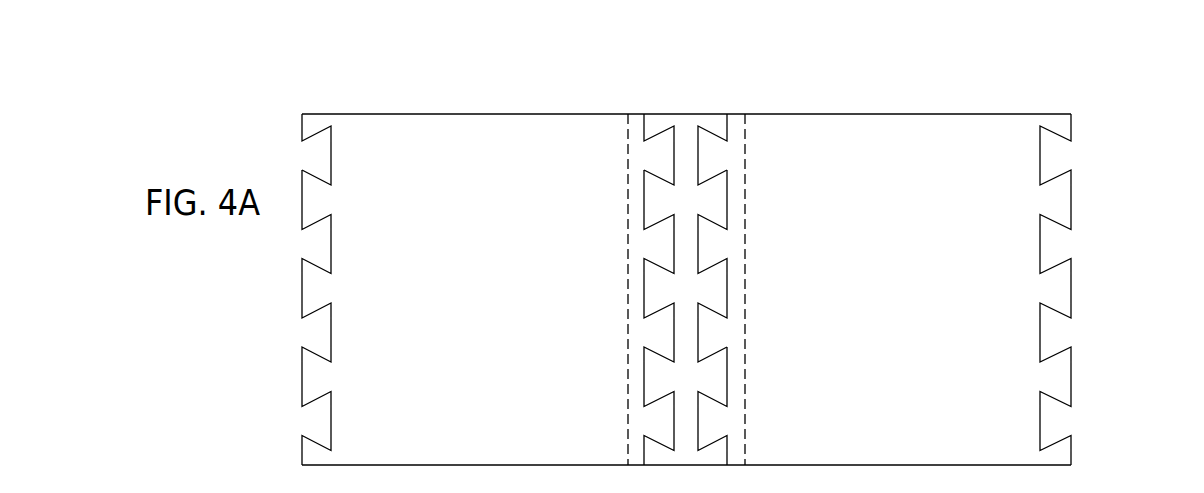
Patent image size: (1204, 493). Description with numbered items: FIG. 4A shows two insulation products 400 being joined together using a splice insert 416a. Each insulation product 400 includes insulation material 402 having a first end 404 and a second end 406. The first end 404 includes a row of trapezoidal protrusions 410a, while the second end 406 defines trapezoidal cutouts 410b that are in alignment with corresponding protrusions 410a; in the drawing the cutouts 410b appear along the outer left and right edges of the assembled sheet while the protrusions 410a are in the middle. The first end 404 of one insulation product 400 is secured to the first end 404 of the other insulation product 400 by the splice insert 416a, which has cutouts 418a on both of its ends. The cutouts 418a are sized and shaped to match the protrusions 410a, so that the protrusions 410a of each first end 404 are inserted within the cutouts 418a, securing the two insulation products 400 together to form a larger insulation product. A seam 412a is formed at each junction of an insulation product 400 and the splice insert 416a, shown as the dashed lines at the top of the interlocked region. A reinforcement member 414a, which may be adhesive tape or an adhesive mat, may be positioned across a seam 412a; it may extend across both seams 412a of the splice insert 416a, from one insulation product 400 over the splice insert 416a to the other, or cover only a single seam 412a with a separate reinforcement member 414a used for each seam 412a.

The insulation product 400 is at (506, 90).
The insulation material 402 is at (402, 140).
The first end 404 is at (769, 396).
The second end 406 is at (233, 306).
The trapezoidal protrusion 410a is at (713, 427).
The trapezoidal cutout 410b is at (316, 145).
The seam 412a is at (645, 137).
The reinforcement member 414a is at (745, 370).
The splice insert 416a is at (687, 289).
The cutout 418a is at (658, 203).